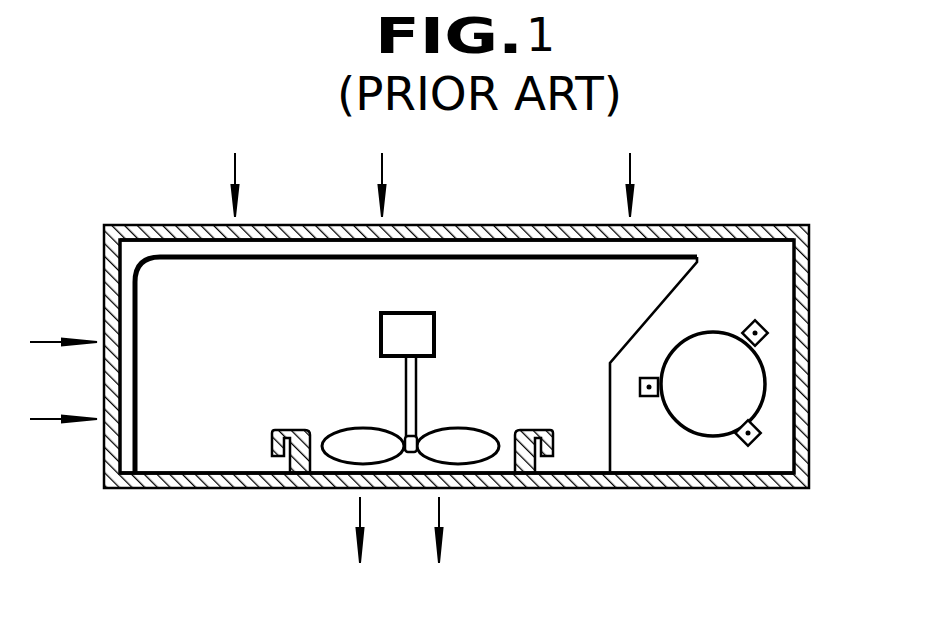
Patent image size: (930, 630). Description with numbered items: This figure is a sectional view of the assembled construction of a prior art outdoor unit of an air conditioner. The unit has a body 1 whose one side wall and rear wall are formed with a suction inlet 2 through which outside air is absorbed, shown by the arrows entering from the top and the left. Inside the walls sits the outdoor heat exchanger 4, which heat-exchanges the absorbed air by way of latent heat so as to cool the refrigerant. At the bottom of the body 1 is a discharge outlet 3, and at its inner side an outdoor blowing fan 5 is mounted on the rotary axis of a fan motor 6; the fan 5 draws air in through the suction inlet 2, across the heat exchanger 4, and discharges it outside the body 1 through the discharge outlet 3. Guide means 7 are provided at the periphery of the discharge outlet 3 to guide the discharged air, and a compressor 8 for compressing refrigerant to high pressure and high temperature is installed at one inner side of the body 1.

The body 1 is at (797, 223).
The suction inlet 2 is at (285, 230).
The discharge outlet 3 is at (478, 490).
The outdoor heat exchanger 4 is at (182, 248).
The outdoor blowing fan 5 is at (365, 457).
The fan motor 6 is at (435, 330).
The guide means 7 is at (322, 490).
The compressor 8 is at (713, 425).